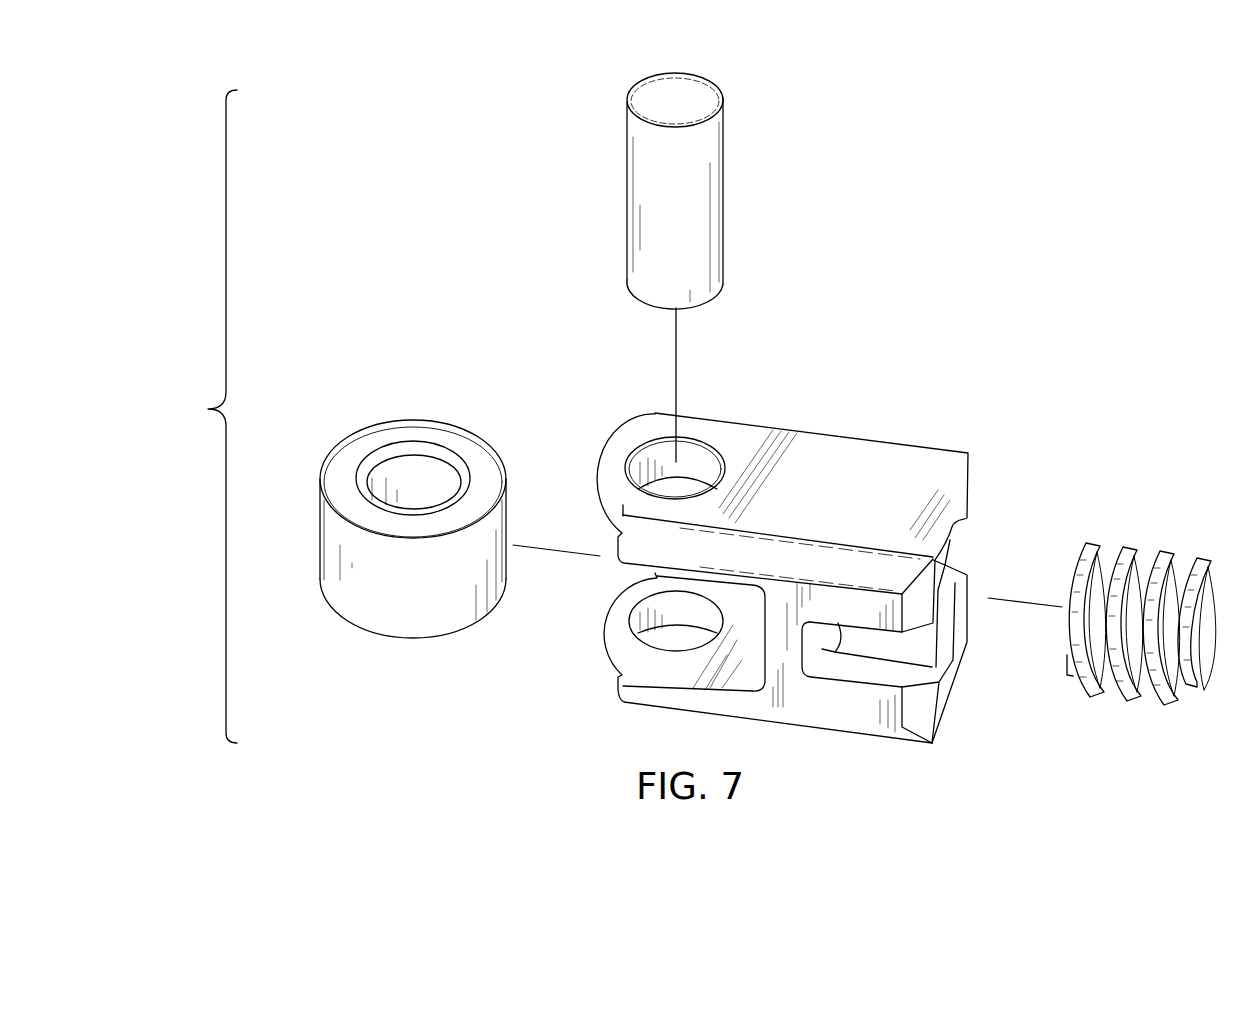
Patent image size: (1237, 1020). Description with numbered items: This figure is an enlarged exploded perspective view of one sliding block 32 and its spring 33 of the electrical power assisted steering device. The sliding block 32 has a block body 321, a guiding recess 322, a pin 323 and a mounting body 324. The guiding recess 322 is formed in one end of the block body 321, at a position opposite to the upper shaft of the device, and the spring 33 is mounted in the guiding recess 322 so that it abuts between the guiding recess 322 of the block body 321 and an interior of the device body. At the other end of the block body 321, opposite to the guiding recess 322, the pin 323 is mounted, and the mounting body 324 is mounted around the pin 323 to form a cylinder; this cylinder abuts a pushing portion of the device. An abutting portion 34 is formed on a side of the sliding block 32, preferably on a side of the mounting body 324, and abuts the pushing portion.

The sliding block 32 is at (875, 398).
The block body 321 is at (893, 448).
The guiding recess 322 is at (925, 657).
The pin 323 is at (712, 213).
The mounting body 324 is at (448, 433).
The spring 33 is at (1162, 553).
The abutting portion 34 is at (333, 570).